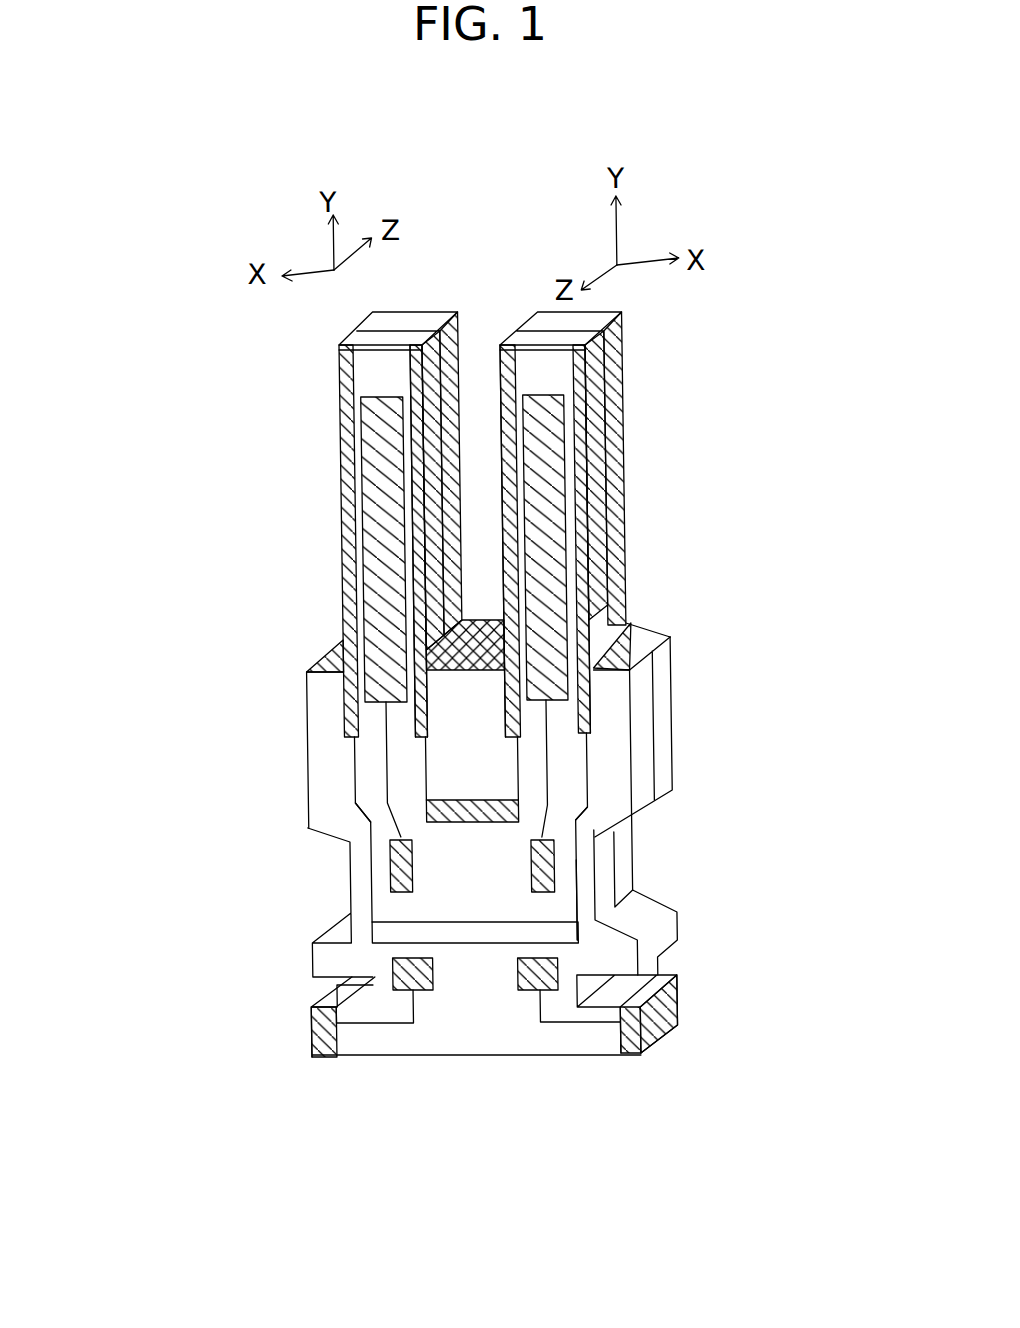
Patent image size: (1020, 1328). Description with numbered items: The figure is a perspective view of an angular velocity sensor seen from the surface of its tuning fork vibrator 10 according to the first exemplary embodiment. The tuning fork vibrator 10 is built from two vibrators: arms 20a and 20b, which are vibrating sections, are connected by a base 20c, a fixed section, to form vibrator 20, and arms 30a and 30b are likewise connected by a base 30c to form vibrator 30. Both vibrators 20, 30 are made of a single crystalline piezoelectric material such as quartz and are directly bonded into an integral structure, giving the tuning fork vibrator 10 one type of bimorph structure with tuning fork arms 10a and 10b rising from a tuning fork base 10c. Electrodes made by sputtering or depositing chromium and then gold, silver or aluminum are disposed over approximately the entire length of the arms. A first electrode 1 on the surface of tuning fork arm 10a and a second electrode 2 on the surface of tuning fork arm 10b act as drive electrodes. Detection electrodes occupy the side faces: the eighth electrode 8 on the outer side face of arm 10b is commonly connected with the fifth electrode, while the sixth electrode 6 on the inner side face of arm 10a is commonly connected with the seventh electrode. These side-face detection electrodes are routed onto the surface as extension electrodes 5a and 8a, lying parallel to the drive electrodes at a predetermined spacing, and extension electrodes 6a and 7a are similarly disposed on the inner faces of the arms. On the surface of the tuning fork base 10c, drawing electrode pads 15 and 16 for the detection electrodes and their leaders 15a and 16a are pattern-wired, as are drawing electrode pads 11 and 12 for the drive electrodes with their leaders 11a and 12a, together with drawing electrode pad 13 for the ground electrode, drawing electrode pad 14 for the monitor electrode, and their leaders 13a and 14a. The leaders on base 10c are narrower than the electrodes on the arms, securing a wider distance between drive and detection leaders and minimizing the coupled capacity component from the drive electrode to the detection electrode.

The first electrode 1 is at (372, 420).
The second electrode 2 is at (548, 482).
The extension electrode 5a is at (424, 478).
The sixth electrode 6 is at (442, 352).
The extension electrode 6a is at (416, 492).
The extension electrode 7a is at (507, 525).
The eighth electrode 8 is at (592, 462).
The extension electrode 8a is at (602, 440).
The tuning fork vibrator 10 is at (272, 639).
The tuning fork arm 10a is at (410, 300).
The tuning fork arm 10b is at (536, 300).
The tuning fork base 10c is at (328, 756).
The drawing electrode pad 11 is at (372, 930).
The leader 11a is at (386, 872).
The drawing electrode pad 12 is at (548, 858).
The leader 12a is at (583, 777).
The drawing electrode pad 13 is at (419, 992).
The leader 13a is at (370, 1026).
The drawing electrode pad 14 is at (519, 992).
The leader 14a is at (565, 1024).
The drawing electrode pad 15 is at (420, 785).
The leader 15a is at (570, 812).
The drawing electrode pad 16 is at (364, 938).
The leader 16a is at (352, 792).
The vibrator 20 is at (298, 706).
The arm 20a is at (352, 341).
The arm 20b is at (587, 346).
The base 20c is at (637, 727).
The vibrator 30 is at (665, 645).
The arm 30a is at (370, 314).
The arm 30b is at (605, 320).
The base 30c is at (662, 692).